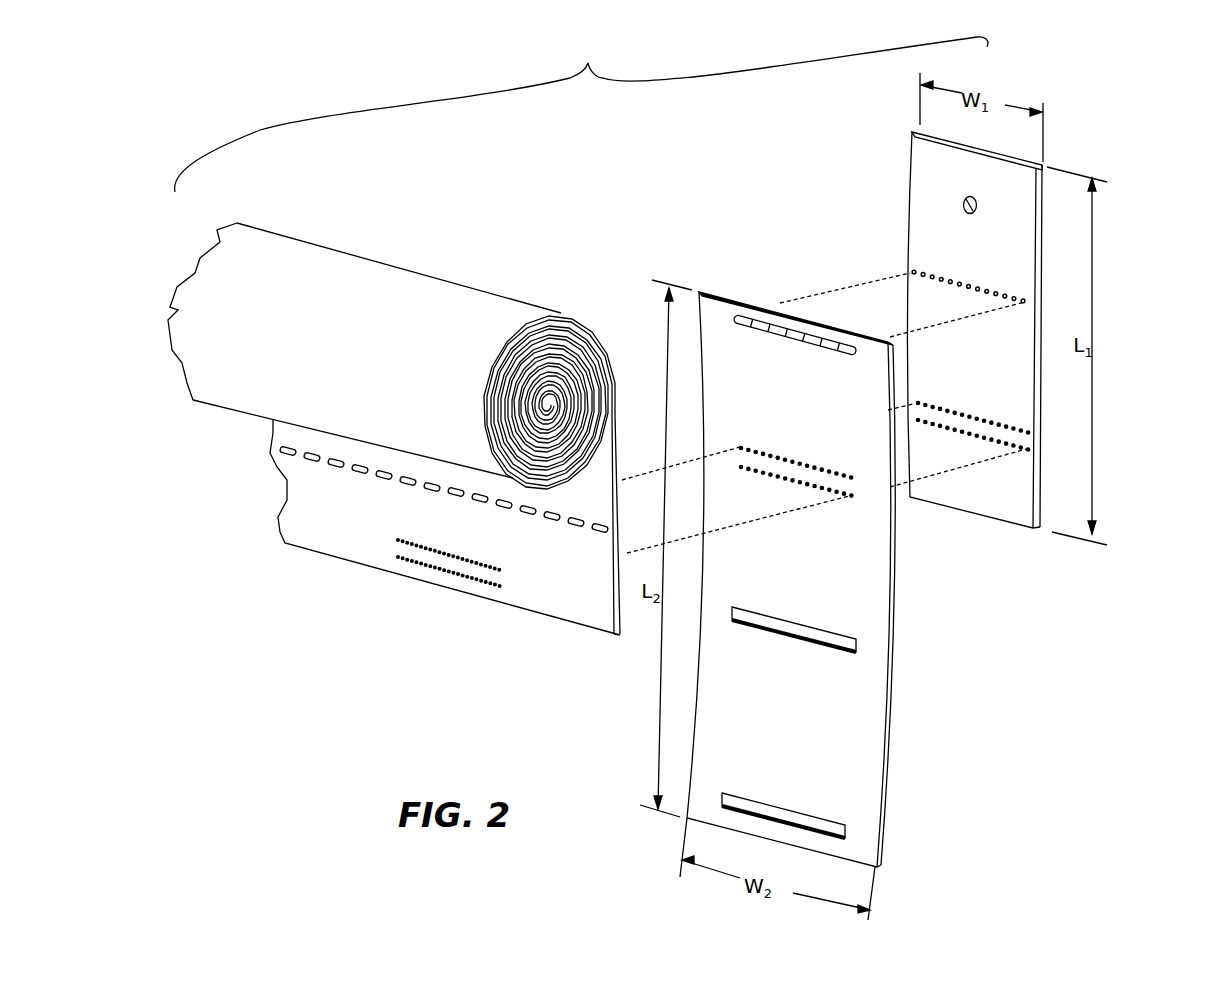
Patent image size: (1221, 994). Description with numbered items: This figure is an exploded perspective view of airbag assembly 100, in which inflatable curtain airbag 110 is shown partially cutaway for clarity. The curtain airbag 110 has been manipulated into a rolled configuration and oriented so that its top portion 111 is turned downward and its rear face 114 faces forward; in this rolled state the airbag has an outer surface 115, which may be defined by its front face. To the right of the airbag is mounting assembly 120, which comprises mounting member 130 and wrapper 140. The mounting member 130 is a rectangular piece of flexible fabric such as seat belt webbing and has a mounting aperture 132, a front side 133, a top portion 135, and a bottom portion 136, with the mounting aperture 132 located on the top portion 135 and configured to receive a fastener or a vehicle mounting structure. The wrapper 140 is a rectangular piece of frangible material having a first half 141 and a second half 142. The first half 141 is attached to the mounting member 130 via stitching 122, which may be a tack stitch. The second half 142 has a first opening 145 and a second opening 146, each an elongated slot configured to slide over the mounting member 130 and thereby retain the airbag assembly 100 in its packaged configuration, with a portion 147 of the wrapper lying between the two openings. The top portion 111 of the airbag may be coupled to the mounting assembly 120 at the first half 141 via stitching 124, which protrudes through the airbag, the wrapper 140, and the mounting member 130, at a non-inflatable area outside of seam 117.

The airbag assembly 100 is at (581, 114).
The inflatable curtain airbag 110 is at (407, 241).
The top portion 111 is at (320, 495).
The rear face 114 is at (544, 576).
The outer surface 115 is at (312, 351).
The seam 117 is at (306, 455).
The mounting assembly 120 is at (914, 468).
The stitching 122 is at (783, 328).
The stitching 124 is at (450, 570).
The mounting member 130 is at (1087, 143).
The mounting aperture 132 is at (963, 204).
The front side 133 is at (969, 253).
The top portion 135 is at (930, 181).
The bottom portion 136 is at (1002, 477).
The wrapper 140 is at (780, 288).
The first half 141 is at (828, 437).
The second half 142 is at (855, 742).
The first opening 145 is at (830, 648).
The second opening 146 is at (822, 818).
The portion 147 is at (825, 758).